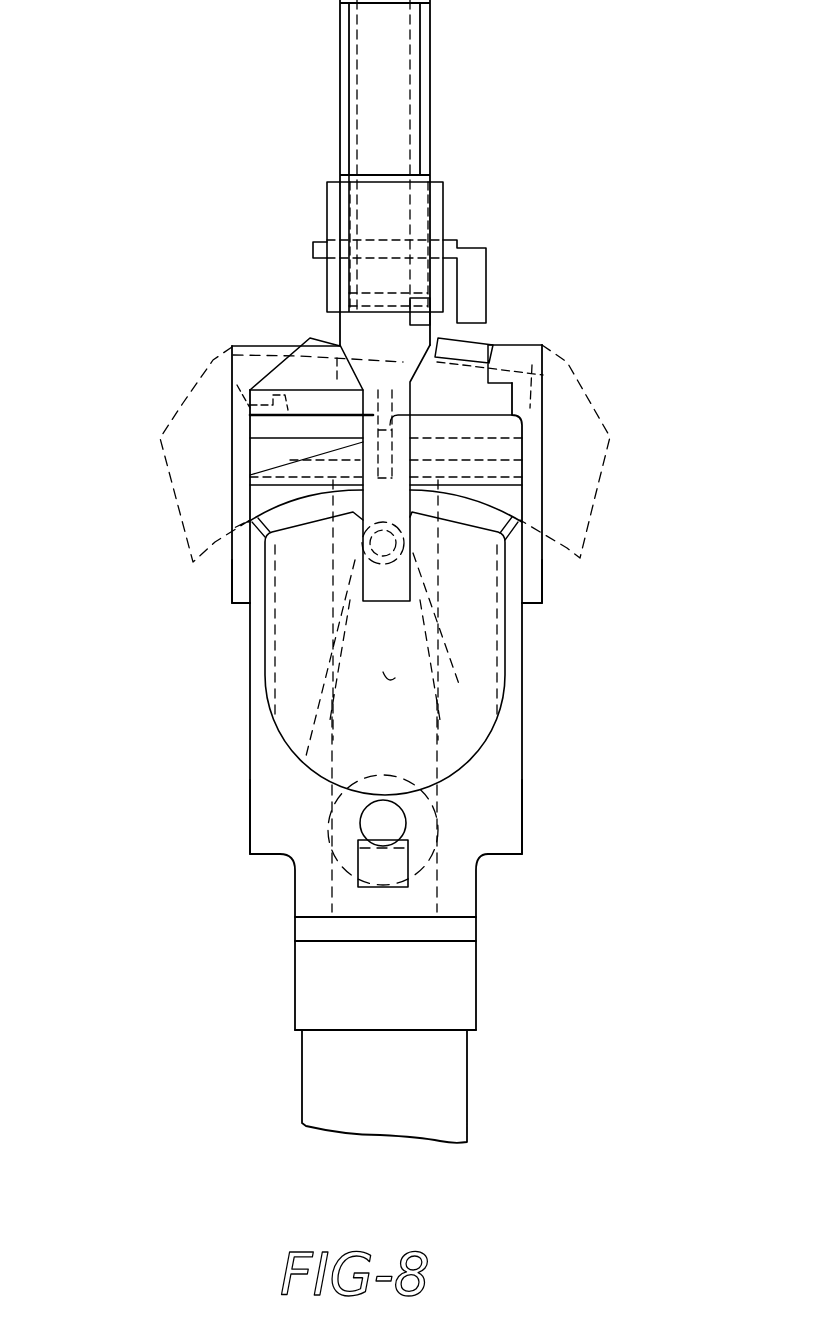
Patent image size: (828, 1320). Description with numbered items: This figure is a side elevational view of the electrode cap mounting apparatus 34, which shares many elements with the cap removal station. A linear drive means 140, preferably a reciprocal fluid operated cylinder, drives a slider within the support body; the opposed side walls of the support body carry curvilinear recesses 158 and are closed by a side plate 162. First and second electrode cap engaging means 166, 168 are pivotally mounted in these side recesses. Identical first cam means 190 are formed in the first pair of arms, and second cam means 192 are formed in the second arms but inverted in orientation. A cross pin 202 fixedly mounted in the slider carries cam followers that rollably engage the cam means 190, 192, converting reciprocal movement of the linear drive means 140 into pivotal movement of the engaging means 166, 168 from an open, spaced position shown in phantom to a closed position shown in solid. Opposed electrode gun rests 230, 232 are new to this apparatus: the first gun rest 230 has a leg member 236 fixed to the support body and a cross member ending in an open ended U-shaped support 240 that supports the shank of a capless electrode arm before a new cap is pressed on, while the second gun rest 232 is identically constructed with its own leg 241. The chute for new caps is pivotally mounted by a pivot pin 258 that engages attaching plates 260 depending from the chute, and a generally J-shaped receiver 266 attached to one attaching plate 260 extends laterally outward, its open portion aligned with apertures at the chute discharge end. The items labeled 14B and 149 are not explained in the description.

The electrode cap mounting apparatus 34 is at (160, 765).
The attaching plates 260 is at (327, 188).
The pivot pin 258 is at (320, 243).
The J-shaped receiver 266 is at (490, 300).
The first electrode cap engaging means 166 is at (313, 332).
The U-shaped support 240 is at (514, 350).
The second electrode cap engaging means 168 is at (580, 415).
The second gun rest 232 is at (230, 497).
The leg 241 is at (232, 577).
The first gun rest 230 is at (546, 507).
The leg member 236 is at (545, 590).
The cross pin 202 is at (390, 548).
The curvilinear recesses 158 is at (265, 687).
The second cam means 192 is at (385, 677).
The first cam means 190 is at (404, 722).
The valve body 14B is at (248, 825).
The side plate 162 is at (510, 830).
The neck band 149 is at (297, 928).
The linear drive means 140 is at (318, 1085).